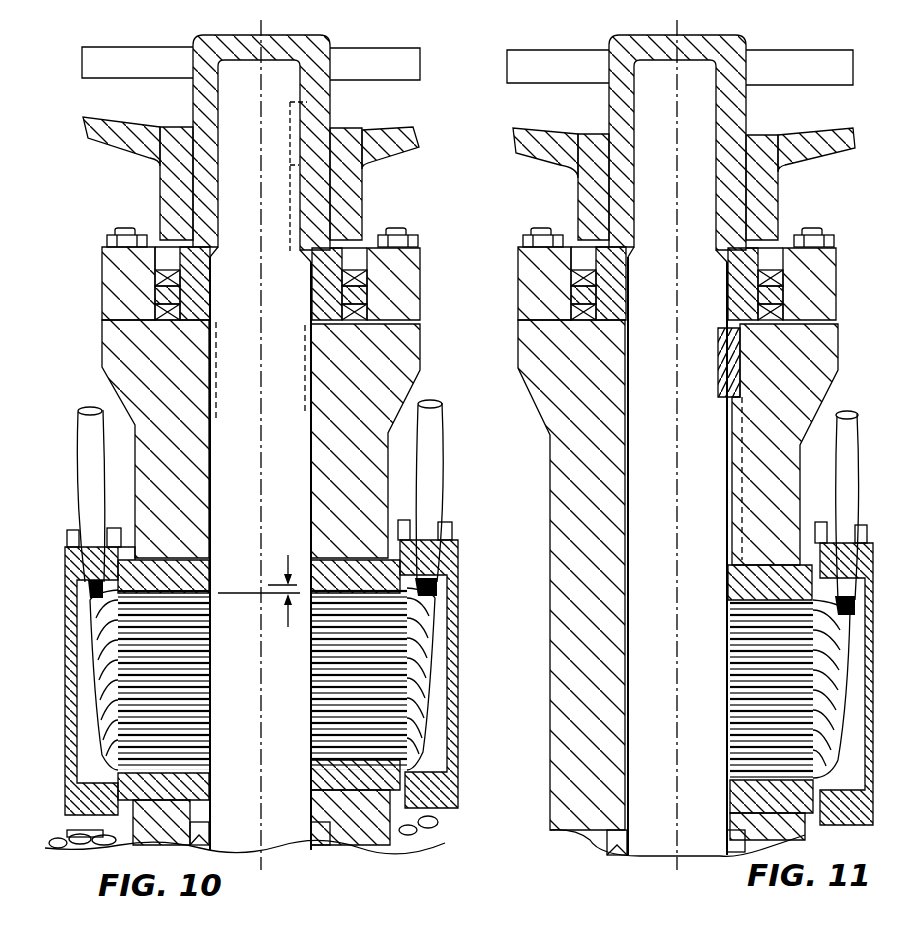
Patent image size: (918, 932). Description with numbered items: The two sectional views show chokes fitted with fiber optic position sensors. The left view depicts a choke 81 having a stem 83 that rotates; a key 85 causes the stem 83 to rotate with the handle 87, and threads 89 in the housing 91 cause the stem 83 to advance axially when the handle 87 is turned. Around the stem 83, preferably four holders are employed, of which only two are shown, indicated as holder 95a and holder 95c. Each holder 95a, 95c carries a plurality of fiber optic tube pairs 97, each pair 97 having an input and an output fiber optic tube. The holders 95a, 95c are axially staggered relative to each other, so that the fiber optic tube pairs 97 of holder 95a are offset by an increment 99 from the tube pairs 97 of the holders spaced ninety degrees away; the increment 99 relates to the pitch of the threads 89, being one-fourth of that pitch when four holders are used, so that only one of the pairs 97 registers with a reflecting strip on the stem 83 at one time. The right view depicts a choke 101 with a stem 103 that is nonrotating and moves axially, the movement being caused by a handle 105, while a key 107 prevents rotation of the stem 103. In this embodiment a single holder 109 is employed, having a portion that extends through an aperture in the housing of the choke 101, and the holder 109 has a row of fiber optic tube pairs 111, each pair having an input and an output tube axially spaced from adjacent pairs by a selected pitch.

In FIG. 10, the choke 81 is at (84, 381).
In FIG. 10, the stem 83 is at (302, 417).
In FIG. 10, the key 85 is at (320, 124).
In FIG. 10, the handle 87 is at (383, 150).
In FIG. 10, the threads 89 is at (216, 346).
In FIG. 10, the housing 91 is at (413, 335).
In FIG. 10, the holder 95a is at (68, 737).
In FIG. 10, the holder 95c is at (462, 653).
In FIG. 10, the fiber optic tube pairs 97 is at (312, 748).
In FIG. 10, the increment 99 is at (280, 582).
In FIG. 11, the choke 101 is at (535, 470).
In FIG. 11, the stem 103 is at (633, 547).
In FIG. 11, the handle 105 is at (532, 150).
In FIG. 11, the key 107 is at (718, 348).
In FIG. 11, the holder 109 is at (728, 583).
In FIG. 11, the fiber optic tube pairs 111 is at (727, 660).